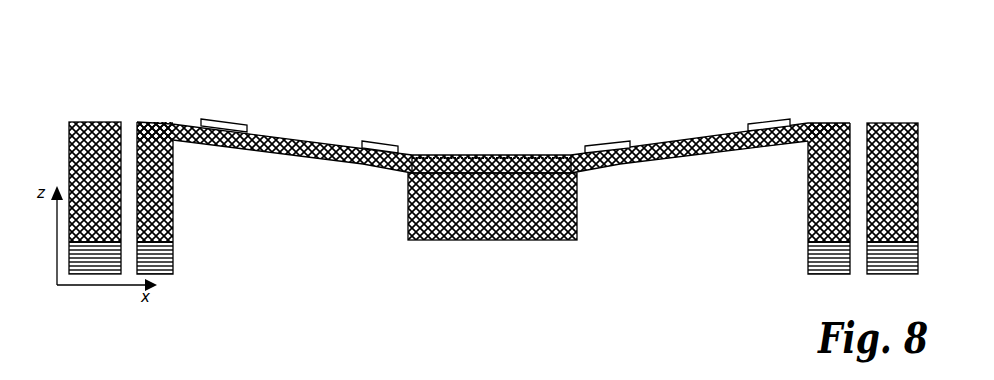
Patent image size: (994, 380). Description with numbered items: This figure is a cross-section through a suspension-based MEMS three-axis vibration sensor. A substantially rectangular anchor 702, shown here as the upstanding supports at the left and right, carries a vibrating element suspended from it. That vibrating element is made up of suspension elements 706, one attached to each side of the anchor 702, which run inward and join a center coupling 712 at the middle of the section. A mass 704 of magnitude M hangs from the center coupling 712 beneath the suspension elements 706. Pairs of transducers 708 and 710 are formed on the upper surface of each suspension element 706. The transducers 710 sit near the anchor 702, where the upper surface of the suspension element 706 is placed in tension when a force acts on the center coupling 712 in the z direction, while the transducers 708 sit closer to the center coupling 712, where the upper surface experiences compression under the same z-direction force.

The anchor 702 is at (172, 222).
The mass 704 is at (577, 237).
The suspension element 706 is at (332, 162).
The transducer 708 is at (380, 147).
The transducer 710 is at (220, 120).
The center coupling 712 is at (453, 155).